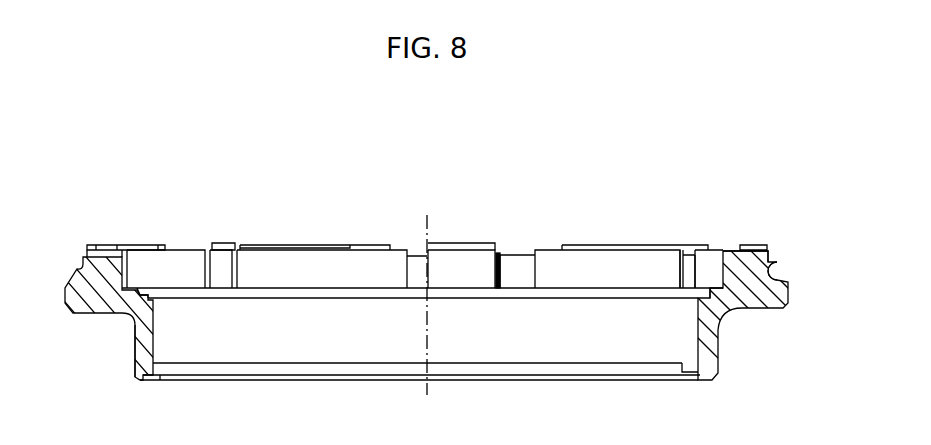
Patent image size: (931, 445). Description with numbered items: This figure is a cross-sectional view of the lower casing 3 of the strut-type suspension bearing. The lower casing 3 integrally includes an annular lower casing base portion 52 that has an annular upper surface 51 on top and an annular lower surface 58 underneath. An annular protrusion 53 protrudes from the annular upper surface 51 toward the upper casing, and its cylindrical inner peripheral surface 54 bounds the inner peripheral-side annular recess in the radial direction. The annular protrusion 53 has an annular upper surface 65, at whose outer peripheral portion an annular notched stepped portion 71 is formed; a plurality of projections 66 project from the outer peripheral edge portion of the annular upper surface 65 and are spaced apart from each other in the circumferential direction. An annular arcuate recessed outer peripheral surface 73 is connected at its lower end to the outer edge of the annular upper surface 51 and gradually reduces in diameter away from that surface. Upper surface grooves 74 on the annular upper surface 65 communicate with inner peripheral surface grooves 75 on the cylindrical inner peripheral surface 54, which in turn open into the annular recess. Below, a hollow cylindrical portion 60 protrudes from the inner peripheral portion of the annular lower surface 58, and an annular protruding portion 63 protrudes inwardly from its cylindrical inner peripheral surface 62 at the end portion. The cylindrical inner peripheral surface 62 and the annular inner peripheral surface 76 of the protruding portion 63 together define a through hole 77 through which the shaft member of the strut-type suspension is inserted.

The lower casing 3 is at (460, 342).
The annular upper surface 51 is at (212, 273).
The annular lower casing base portion 52 is at (87, 304).
The annular protrusion 53 is at (292, 267).
The cylindrical inner peripheral surface 54 is at (689, 260).
The annular lower surface 58 is at (742, 309).
The hollow cylindrical portion 60 is at (134, 347).
The cylindrical inner peripheral surface 62 is at (697, 341).
The annular protruding portion 63 is at (157, 381).
The annular upper surface 65 is at (350, 246).
The projections 66 is at (157, 245).
The annular notched stepped portion 71 is at (78, 251).
The annular arcuate recessed outer peripheral surface 73 is at (778, 273).
The upper surface grooves 74 is at (117, 255).
The inner peripheral surface grooves 75 is at (130, 275).
The annular inner peripheral surface 76 is at (543, 368).
The through hole 77 is at (365, 351).